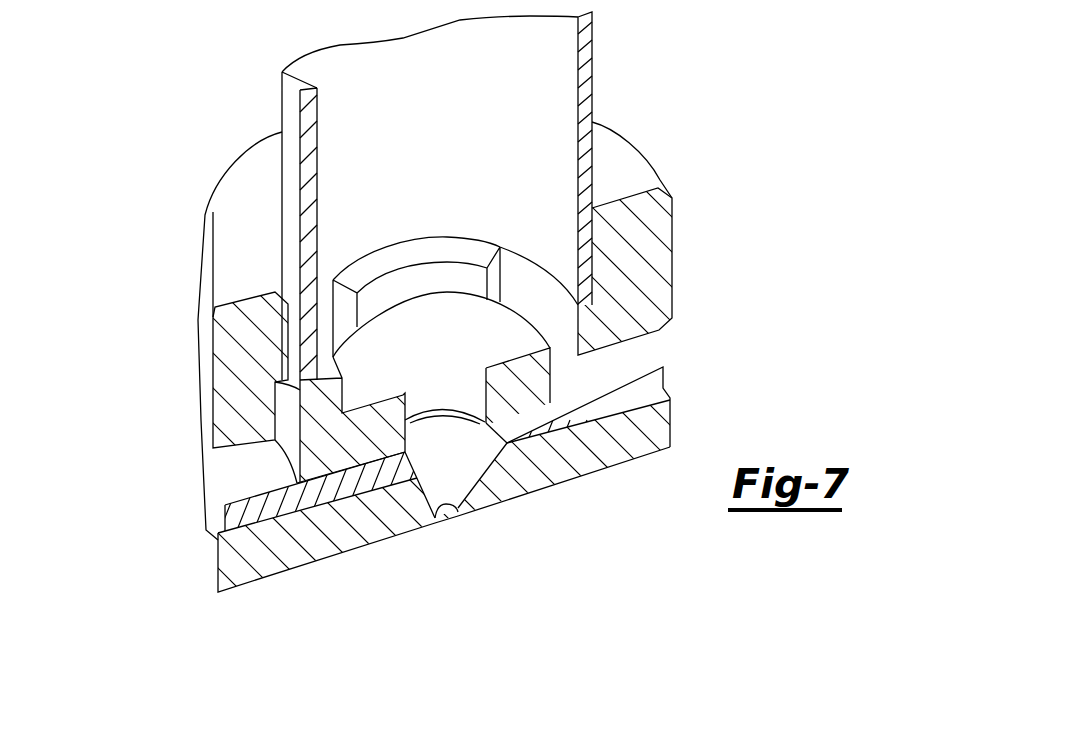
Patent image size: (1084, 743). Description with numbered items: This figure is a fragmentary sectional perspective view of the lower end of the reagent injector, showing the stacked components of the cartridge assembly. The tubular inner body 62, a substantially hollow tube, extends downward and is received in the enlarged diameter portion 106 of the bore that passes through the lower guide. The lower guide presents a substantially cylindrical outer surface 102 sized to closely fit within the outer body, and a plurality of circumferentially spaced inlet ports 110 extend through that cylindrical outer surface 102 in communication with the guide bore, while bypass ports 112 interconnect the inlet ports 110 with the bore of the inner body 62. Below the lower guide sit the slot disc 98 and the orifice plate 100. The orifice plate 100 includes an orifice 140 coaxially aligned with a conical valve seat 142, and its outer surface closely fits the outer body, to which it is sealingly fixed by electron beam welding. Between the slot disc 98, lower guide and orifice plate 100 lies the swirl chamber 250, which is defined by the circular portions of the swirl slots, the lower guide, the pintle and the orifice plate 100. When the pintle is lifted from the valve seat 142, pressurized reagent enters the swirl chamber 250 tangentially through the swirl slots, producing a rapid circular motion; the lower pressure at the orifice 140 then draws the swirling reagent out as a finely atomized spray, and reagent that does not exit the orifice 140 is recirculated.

The inner body 62 is at (593, 55).
The enlarged diameter portion 106 is at (580, 252).
The cylindrical outer surface 102 is at (659, 180).
The slot disc 98 is at (646, 355).
The bypass ports 112 is at (555, 303).
The inlet ports 110 is at (222, 355).
The orifice plate 100 is at (216, 565).
The conical valve seat 142 is at (400, 488).
The orifice 140 is at (445, 520).
The swirl chamber 250 is at (500, 428).